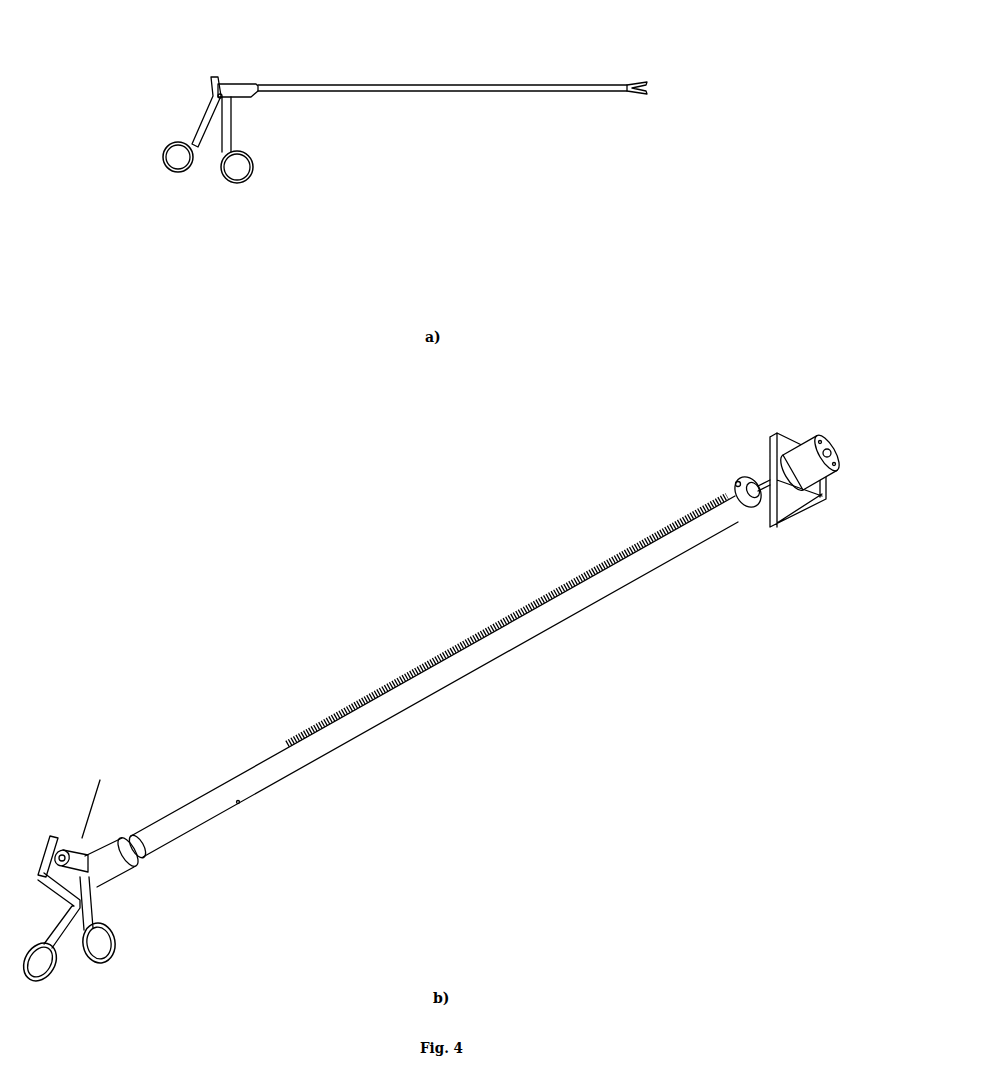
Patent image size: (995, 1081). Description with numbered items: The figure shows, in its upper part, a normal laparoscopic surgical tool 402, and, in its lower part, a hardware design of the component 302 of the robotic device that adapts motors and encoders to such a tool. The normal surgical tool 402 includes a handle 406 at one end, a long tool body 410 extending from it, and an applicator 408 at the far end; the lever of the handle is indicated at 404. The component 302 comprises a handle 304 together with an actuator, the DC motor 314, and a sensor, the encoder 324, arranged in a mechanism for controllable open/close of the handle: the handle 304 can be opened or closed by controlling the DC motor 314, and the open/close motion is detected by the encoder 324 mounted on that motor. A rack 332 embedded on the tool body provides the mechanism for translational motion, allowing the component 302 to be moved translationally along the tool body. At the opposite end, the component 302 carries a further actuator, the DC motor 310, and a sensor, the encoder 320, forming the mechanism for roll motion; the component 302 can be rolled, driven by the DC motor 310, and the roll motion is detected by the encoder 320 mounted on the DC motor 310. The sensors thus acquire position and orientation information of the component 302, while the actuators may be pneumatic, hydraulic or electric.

The laparoscopic surgical tool 402 is at (42, 218).
The movable handle lever 404 is at (143, 124).
The handle 406 is at (283, 140).
The applicator 408 is at (680, 68).
The tool shaft 410 is at (442, 67).
The component 302 is at (368, 584).
The handle 304 is at (113, 930).
The DC motor 310 is at (799, 504).
The DC motor 314 is at (140, 813).
The encoder 320 is at (841, 438).
The encoder 324 is at (170, 858).
The rack 332 is at (507, 620).